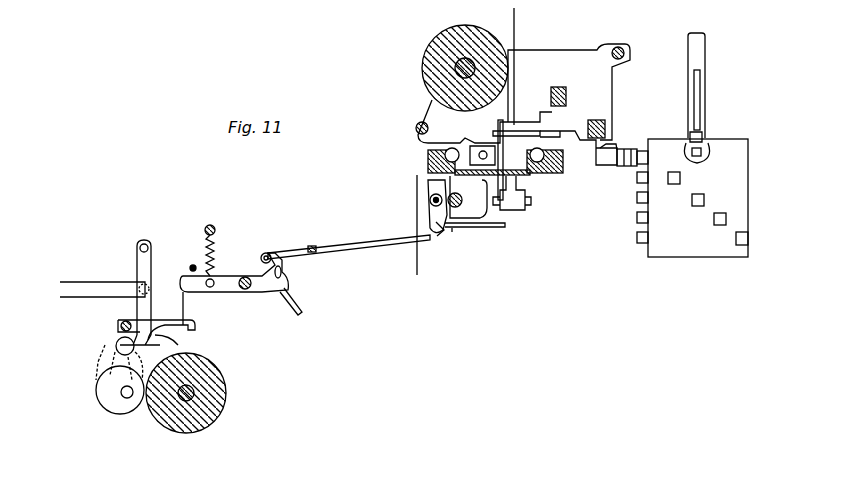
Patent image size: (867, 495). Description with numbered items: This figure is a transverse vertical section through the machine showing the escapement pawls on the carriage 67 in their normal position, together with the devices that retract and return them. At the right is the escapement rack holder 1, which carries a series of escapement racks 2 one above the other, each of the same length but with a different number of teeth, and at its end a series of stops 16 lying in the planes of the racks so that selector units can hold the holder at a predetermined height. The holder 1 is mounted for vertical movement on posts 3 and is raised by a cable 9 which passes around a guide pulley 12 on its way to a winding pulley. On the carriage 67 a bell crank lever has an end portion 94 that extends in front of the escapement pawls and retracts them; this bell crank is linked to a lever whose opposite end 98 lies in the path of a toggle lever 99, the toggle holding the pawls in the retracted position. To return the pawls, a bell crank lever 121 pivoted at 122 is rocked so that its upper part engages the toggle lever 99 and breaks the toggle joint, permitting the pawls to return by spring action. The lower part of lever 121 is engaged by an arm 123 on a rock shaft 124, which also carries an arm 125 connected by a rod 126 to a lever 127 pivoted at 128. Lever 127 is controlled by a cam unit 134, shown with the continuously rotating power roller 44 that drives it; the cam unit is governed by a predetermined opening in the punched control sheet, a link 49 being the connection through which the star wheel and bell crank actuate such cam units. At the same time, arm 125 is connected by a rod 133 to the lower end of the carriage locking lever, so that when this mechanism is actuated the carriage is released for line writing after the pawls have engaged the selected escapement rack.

The escapement rack holder 1 is at (738, 222).
The escapement racks 2 is at (636, 237).
The posts 3 is at (695, 50).
The cable 9 is at (700, 97).
The guide pulley 12 is at (512, 15).
The stops 16 is at (718, 213).
The power roller 44 is at (216, 406).
The link 49 is at (95, 284).
The carriage 67 is at (565, 64).
The end portion 94 is at (632, 166).
The lever end 98 is at (522, 131).
The toggle lever 99 is at (500, 125).
The bell crank lever 121 is at (470, 216).
The pivot 122 is at (483, 150).
The arm 123 is at (463, 191).
The rock shaft 124 is at (430, 198).
The arm 125 is at (430, 218).
The rod 126 is at (325, 249).
The lever 127 is at (235, 276).
The pivot 128 is at (248, 290).
The rod 133 is at (452, 230).
The cam unit 134 is at (104, 396).